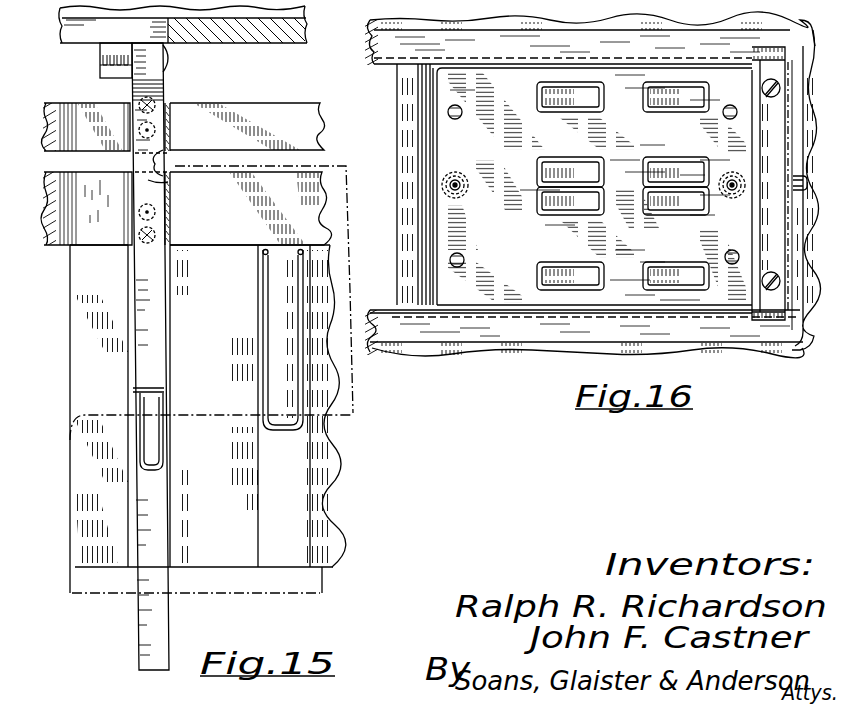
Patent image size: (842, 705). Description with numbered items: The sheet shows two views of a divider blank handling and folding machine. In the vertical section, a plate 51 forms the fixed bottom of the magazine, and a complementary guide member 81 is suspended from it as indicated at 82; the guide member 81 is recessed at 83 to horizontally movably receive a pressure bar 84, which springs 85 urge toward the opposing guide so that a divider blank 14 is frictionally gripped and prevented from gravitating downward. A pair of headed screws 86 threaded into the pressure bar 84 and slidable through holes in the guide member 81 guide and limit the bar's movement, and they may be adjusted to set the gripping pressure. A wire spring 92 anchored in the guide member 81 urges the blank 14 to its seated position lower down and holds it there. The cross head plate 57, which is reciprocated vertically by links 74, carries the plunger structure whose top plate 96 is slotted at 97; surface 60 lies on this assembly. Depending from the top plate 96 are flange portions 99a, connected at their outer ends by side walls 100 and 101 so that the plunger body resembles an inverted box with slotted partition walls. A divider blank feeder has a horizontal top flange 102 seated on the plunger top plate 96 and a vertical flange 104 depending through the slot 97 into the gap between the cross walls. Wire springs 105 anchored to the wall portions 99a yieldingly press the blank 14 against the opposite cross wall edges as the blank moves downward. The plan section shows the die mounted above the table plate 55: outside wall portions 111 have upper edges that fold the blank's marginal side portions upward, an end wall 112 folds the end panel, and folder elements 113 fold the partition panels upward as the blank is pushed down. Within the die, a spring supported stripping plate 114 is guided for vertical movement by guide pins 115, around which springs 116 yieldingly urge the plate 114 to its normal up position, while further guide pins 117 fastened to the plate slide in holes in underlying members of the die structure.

In FIG. 15, the divider blank 14 is at (237, 591).
In FIG. 15, the plate 51 is at (285, 38).
In FIG. 15, the cross head plate 57 is at (323, 120).
In FIG. 15, the plate surface 60 is at (265, 106).
In FIG. 15, the complementary guide member 81 is at (155, 330).
In FIG. 15, the suspension of guide member 82 is at (171, 60).
In FIG. 15, the recess 83 is at (163, 165).
In FIG. 15, the pressure bar 84 is at (168, 182).
In FIG. 15, the spring 85 is at (157, 130).
In FIG. 15, the headed screw 86 is at (168, 90).
In FIG. 15, the wire spring 92 is at (163, 452).
In FIG. 15, the top plate 96 is at (48, 248).
In FIG. 15, the slot 97 is at (104, 230).
In FIG. 15, the flange portion 99a is at (268, 523).
In FIG. 15, the side wall 100 is at (325, 400).
In FIG. 15, the side wall 101 is at (303, 12).
In FIG. 15, the horizontal top flange 102 is at (322, 165).
In FIG. 15, the vertical flange 104 is at (348, 386).
In FIG. 15, the wire spring 105 is at (265, 307).
In FIG. 16, the table plate 55 is at (502, 346).
In FIG. 16, the link 74 is at (739, 338).
In FIG. 16, the outside wall portion 111 is at (706, 40).
In FIG. 16, the end wall 112 is at (412, 200).
In FIG. 16, the folder element 113 is at (660, 96).
In FIG. 16, the stripping plate 114 is at (595, 186).
In FIG. 16, the guide pin 115 is at (466, 178).
In FIG. 16, the spring 116 is at (463, 196).
In FIG. 16, the guide pin 117 is at (462, 95).